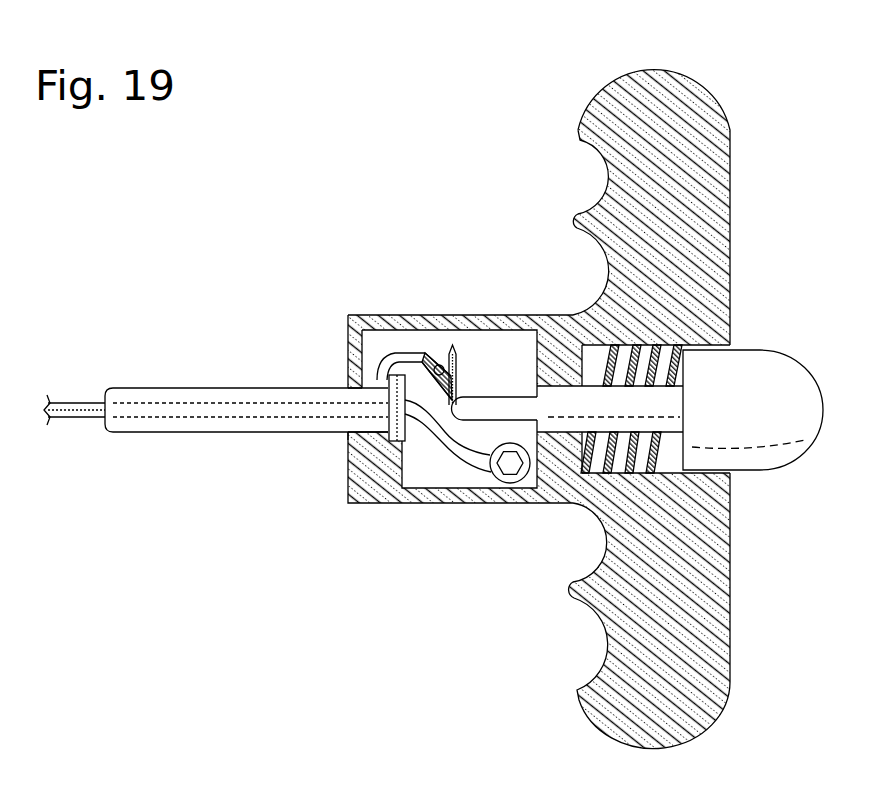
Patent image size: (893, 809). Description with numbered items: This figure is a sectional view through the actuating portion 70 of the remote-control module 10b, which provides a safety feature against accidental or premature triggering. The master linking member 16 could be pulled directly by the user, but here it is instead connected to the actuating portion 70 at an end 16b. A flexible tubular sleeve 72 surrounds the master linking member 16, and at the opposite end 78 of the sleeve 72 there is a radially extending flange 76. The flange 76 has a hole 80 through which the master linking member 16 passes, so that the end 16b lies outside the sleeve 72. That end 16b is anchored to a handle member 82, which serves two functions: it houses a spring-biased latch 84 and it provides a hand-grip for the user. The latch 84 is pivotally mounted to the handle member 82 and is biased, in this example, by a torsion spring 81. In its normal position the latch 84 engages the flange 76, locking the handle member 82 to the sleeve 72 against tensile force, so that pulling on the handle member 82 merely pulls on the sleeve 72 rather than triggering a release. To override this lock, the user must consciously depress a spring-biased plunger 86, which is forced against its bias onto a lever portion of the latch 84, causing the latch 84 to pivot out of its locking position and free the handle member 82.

The remote-control module 10b is at (697, 46).
The master linking member 16 is at (68, 420).
The end of master linking member 16b is at (468, 462).
The actuating portion 70 is at (333, 344).
The flexible tubular sleeve 72 is at (212, 386).
The radially extending flange 76 is at (350, 375).
The opposite end of sleeve 78 is at (332, 438).
The hole 80 is at (406, 418).
The torsion spring 81 is at (458, 350).
The handle member 82 is at (732, 652).
The spring-biased latch 84 is at (388, 363).
The spring-biased plunger 86 is at (752, 419).